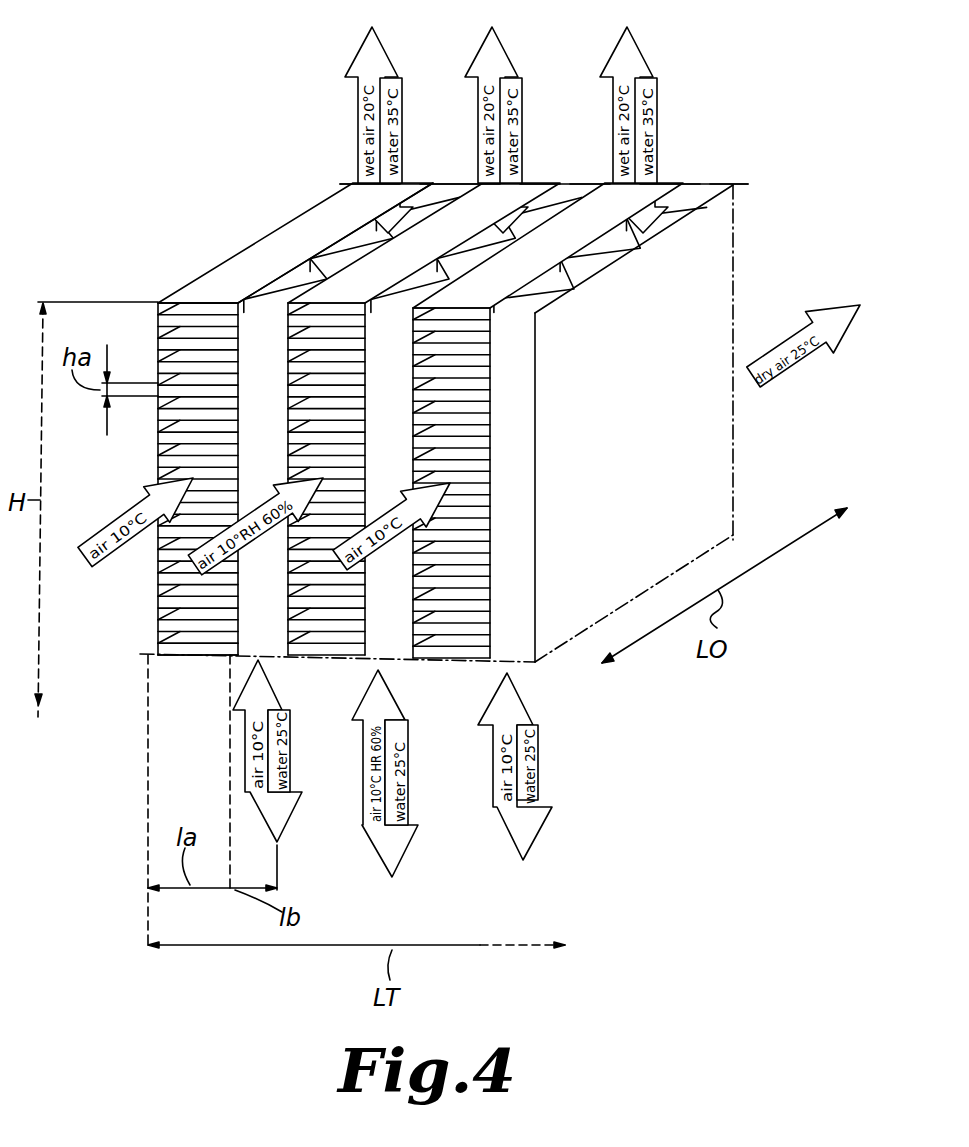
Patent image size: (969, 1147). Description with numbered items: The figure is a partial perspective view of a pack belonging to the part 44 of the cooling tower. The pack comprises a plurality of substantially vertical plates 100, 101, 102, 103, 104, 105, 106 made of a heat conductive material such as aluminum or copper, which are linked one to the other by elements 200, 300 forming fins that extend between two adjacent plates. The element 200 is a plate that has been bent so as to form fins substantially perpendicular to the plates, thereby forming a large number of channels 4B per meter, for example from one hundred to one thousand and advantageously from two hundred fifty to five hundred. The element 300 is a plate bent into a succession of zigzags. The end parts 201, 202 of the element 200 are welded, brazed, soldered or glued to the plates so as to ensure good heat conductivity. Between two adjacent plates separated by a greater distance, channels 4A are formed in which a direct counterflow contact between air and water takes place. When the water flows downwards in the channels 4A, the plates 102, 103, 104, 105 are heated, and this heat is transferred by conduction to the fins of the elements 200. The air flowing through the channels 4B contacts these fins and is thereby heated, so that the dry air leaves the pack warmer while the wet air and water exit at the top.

The part 44 is at (280, 170).
The plate 100 is at (213, 263).
The plate 101 is at (345, 185).
The plate 102 is at (460, 183).
The plate 103 is at (545, 183).
The plate 104 is at (590, 183).
The plate 105 is at (668, 183).
The wet channel outlet 106 is at (745, 186).
The element 200 is at (190, 430).
The end part 201 is at (157, 318).
The end part 202 is at (257, 300).
The element 300 is at (268, 215).
The channel 4A is at (590, 270).
The channel 4B is at (490, 570).